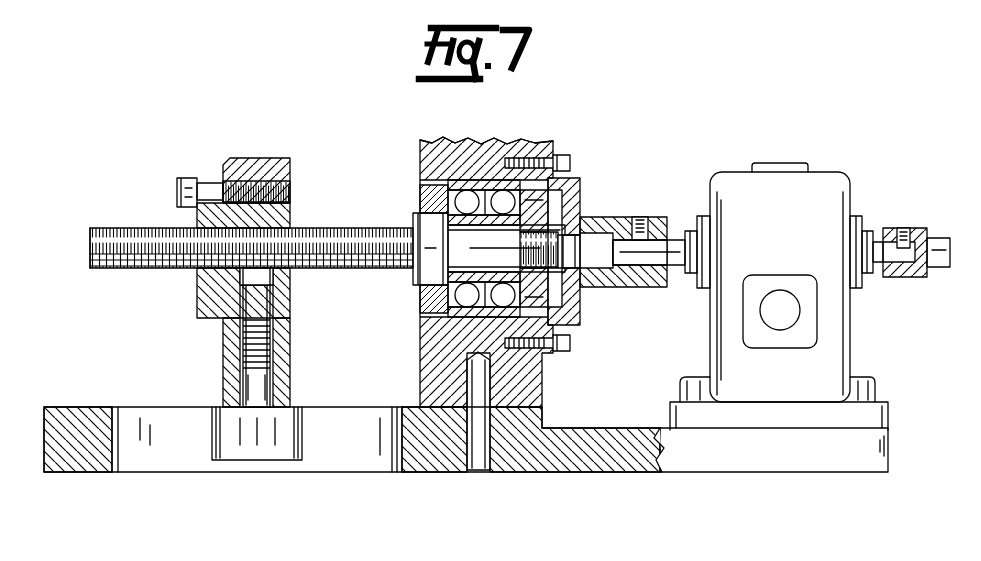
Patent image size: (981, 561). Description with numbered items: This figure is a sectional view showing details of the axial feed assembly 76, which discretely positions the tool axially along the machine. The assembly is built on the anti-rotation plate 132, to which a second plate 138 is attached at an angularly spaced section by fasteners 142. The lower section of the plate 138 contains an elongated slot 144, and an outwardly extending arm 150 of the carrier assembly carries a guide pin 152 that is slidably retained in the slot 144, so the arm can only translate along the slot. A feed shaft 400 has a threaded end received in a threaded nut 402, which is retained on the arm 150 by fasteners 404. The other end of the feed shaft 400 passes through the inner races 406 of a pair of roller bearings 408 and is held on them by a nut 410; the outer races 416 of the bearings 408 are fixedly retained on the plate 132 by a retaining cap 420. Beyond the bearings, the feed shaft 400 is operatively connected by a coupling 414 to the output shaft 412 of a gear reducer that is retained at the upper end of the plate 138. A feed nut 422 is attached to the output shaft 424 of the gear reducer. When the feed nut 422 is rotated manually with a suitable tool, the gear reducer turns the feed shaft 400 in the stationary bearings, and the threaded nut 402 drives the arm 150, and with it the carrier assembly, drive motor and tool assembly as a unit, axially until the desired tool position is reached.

The axial feed assembly 76 is at (656, 147).
The plate 132 is at (540, 140).
The plate 138 is at (445, 455).
The fasteners 142 is at (790, 168).
The elongated slot 144 is at (370, 460).
The arm 150 is at (262, 167).
The guide pin 152 is at (262, 455).
The feed shaft 400 is at (363, 228).
The threaded nut 402 is at (190, 217).
The fasteners 404 is at (186, 177).
The inner races 406 is at (487, 185).
The roller bearings 408 is at (463, 182).
The nut 410 is at (548, 205).
The output shaft 412 is at (672, 263).
The coupling 414 is at (606, 222).
The outer races 416 is at (422, 338).
The retaining cap 420 is at (573, 308).
The feed nut 422 is at (902, 230).
The output shaft 424 is at (878, 270).